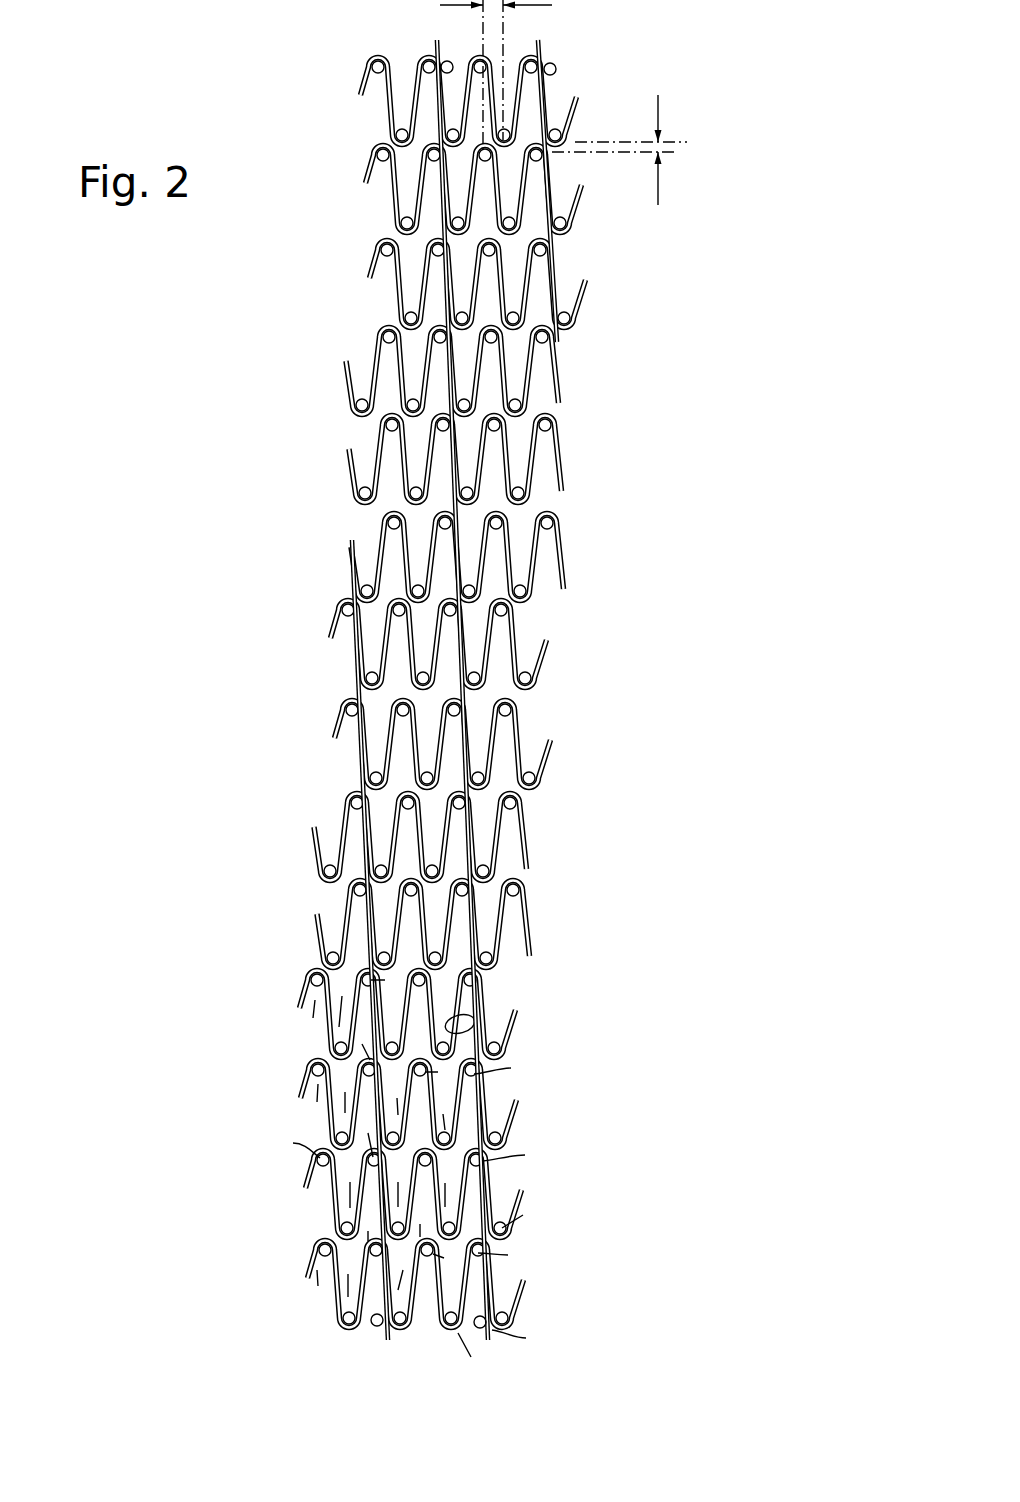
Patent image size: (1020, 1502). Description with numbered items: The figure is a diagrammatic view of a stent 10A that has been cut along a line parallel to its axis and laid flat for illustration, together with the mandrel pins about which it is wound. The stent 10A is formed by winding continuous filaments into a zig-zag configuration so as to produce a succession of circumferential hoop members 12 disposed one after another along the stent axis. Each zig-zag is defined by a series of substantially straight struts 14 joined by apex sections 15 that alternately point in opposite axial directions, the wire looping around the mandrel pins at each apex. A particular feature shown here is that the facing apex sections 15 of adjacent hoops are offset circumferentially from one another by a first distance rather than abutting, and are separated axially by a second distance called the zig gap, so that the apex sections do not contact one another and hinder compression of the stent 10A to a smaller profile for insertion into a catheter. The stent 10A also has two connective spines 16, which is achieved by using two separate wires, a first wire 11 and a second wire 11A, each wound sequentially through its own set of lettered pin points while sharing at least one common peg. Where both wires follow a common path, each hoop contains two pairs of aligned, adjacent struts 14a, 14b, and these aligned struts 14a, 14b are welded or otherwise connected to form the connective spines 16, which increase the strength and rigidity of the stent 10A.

The stent 10A is at (523, 687).
The wire 11 is at (487, 1277).
The second wire 11A is at (389, 1335).
The hoop members 12 is at (338, 460).
The struts 14 is at (465, 193).
The aligned adjacent strut 14a is at (483, 1003).
The aligned adjacent strut 14b is at (453, 1018).
The apex sections 15 is at (512, 137).
The connective spines 16 is at (438, 52).